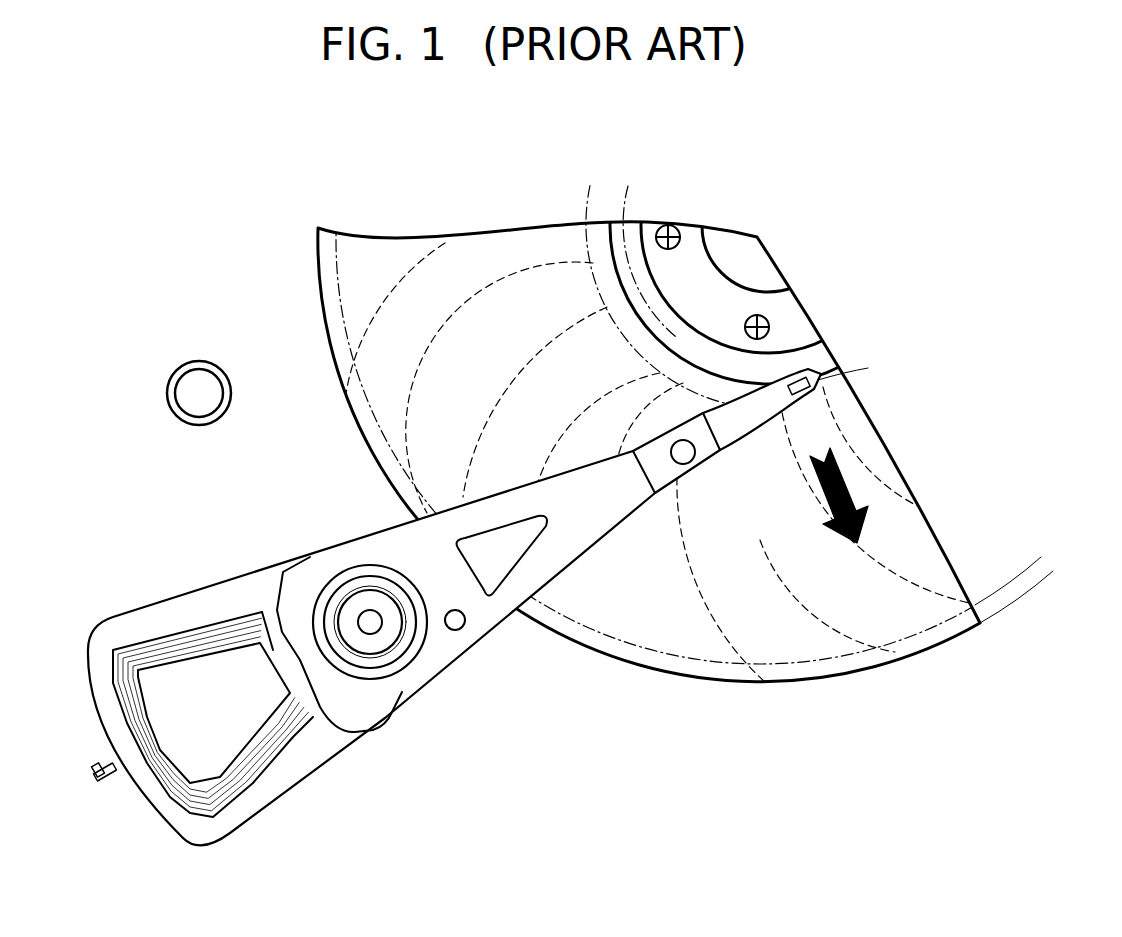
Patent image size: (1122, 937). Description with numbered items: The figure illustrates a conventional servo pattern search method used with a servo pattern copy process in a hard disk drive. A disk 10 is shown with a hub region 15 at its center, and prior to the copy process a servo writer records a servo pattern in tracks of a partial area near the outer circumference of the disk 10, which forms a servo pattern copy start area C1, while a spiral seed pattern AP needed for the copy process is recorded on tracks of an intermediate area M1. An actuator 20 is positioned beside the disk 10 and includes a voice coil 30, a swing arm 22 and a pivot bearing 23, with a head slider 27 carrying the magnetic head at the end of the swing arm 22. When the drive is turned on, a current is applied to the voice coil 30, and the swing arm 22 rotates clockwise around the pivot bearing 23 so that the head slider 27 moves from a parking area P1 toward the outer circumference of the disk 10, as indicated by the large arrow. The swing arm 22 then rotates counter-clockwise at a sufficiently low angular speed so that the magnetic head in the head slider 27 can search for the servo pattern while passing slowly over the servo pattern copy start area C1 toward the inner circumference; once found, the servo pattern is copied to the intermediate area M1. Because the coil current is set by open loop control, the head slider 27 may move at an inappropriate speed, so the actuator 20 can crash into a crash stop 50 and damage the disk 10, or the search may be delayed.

The disk 10 is at (786, 692).
The spindle hub 15 is at (757, 267).
The actuator 20 is at (492, 606).
The swing arm 22 is at (463, 650).
The pivot bearing 23 is at (383, 657).
The head slider 27 is at (796, 388).
The voice coil 30 is at (170, 783).
The crash stop 50 is at (199, 362).
The spiral seed pattern AP is at (468, 447).
The parking area P1 is at (570, 180).
The intermediate area M1 is at (1041, 557).
The servo pattern copy start area C1 is at (1041, 557).